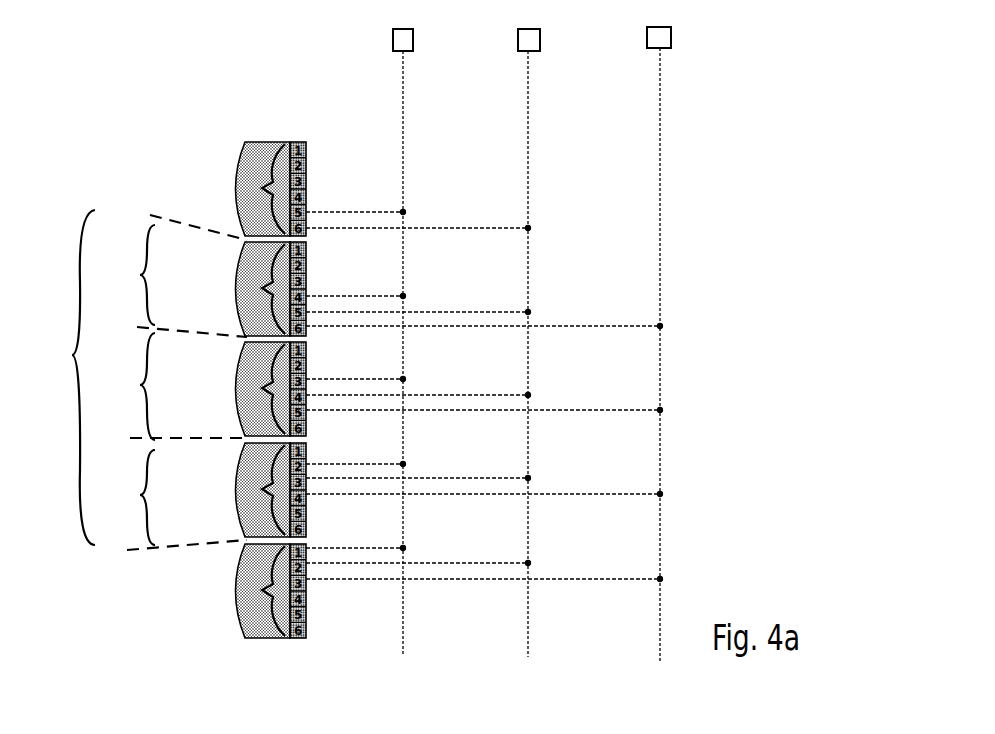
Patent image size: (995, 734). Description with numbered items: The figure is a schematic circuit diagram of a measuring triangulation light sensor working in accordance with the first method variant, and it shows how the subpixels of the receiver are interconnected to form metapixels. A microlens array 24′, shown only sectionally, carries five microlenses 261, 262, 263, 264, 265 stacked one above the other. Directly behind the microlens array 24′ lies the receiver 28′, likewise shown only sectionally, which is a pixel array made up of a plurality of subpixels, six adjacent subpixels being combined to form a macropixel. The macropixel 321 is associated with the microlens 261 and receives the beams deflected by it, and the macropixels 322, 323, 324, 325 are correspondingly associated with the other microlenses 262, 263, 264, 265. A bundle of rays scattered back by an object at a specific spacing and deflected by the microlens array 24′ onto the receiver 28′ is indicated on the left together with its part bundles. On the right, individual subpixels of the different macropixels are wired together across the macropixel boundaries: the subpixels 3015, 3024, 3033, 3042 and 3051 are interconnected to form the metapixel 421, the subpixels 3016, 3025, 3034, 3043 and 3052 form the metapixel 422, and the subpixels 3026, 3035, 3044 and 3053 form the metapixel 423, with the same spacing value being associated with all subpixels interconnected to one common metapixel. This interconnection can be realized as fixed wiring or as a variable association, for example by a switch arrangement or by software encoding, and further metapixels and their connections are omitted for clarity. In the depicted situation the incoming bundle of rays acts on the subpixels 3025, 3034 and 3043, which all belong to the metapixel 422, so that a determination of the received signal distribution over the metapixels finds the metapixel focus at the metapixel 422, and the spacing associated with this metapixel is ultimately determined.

The microlens array 24′ is at (246, 150).
The receiver 28′ is at (297, 148).
The microlens 261 is at (276, 172).
The microlens 262 is at (276, 270).
The microlens 263 is at (276, 370).
The microlens 264 is at (276, 468).
The microlens 265 is at (252, 565).
The macropixel 321 is at (268, 198).
The macropixel 322 is at (268, 298).
The macropixel 323 is at (268, 398).
The macropixel 324 is at (268, 498).
The macropixel 325 is at (262, 592).
The metapixel 421 is at (399, 46).
The metapixel 422 is at (524, 46).
The metapixel 423 is at (652, 45).
The subpixel 3015 is at (306, 210).
The subpixel 3016 is at (306, 230).
The subpixel 3024 is at (306, 294).
The subpixel 3025 is at (306, 314).
The subpixel 3026 is at (306, 328).
The subpixel 3033 is at (306, 377).
The subpixel 3034 is at (306, 393).
The subpixel 3035 is at (306, 412).
The subpixel 3042 is at (306, 462).
The subpixel 3043 is at (306, 476).
The subpixel 3044 is at (306, 496).
The subpixel 3051 is at (306, 546).
The subpixel 3052 is at (306, 561).
The subpixel 3053 is at (306, 581).